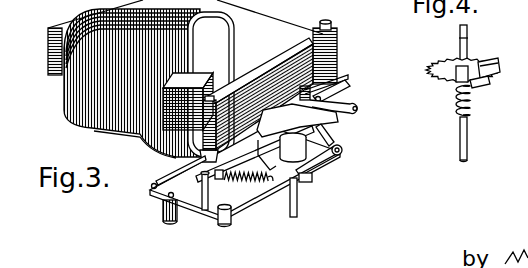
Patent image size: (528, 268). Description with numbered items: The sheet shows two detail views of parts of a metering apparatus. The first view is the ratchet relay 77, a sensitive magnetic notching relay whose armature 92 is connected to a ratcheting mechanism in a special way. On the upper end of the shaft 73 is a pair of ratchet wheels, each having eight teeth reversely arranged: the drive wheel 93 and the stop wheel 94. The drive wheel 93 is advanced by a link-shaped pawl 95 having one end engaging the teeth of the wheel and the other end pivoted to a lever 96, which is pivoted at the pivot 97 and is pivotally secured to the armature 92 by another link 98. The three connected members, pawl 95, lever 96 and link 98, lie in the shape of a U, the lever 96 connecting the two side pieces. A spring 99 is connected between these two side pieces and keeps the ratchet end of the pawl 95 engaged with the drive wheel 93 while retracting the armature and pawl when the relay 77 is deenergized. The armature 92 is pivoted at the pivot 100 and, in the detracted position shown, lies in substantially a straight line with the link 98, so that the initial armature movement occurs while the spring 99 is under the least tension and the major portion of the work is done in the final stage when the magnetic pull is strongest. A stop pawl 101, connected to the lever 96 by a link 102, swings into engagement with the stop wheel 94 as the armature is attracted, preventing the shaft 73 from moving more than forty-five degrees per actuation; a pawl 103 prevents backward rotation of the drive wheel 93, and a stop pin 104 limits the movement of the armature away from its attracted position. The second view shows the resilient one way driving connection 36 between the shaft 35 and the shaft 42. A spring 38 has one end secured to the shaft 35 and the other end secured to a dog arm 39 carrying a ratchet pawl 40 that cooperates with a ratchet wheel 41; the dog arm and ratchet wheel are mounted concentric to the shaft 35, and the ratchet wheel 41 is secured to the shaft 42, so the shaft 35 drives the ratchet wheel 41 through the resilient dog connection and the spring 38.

In FIG. 3, the ratchet relay 77 is at (68, 86).
In FIG. 3, the armature 92 is at (256, 70).
In FIG. 3, the armature pivot 100 is at (328, 25).
In FIG. 3, the stop pin 104 is at (347, 77).
In FIG. 3, the link 102 is at (347, 86).
In FIG. 3, the stop pawl 101 is at (352, 106).
In FIG. 3, the stop wheel 94 is at (336, 119).
In FIG. 3, the pawl 103 is at (332, 140).
In FIG. 3, the drive wheel 93 is at (343, 150).
In FIG. 3, the link-shaped pawl 95 is at (311, 181).
In FIG. 3, the shaft 73 is at (298, 210).
In FIG. 3, the link 98 is at (165, 176).
In FIG. 3, the lever pivot 97 is at (162, 200).
In FIG. 3, the lever 96 is at (196, 209).
In FIG. 3, the spring 99 is at (209, 178).
In FIG. 4, the resilient one way driving connection 36 is at (482, 43).
In FIG. 4, the shaft 42 is at (458, 40).
In FIG. 4, the ratchet wheel 41 is at (437, 73).
In FIG. 4, the ratchet pawl 40 is at (499, 67).
In FIG. 4, the dog arm 39 is at (483, 84).
In FIG. 4, the spring 38 is at (471, 105).
In FIG. 4, the shaft 35 is at (467, 152).